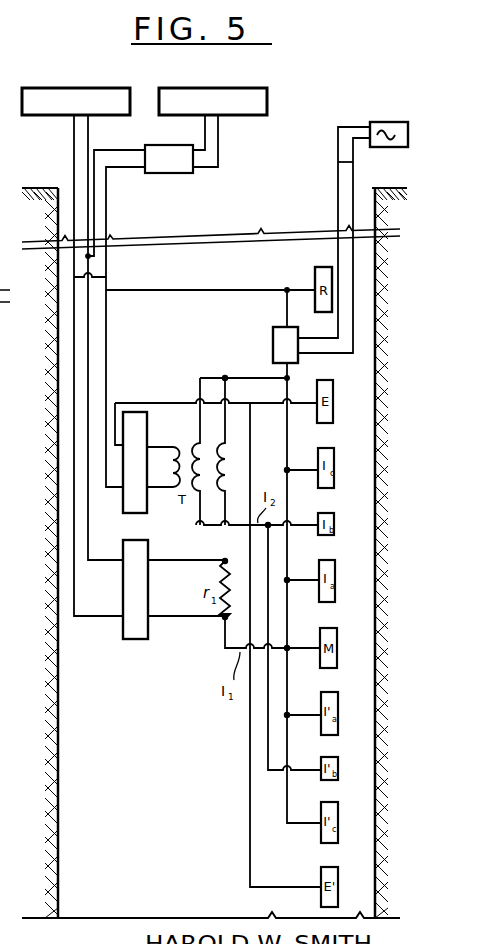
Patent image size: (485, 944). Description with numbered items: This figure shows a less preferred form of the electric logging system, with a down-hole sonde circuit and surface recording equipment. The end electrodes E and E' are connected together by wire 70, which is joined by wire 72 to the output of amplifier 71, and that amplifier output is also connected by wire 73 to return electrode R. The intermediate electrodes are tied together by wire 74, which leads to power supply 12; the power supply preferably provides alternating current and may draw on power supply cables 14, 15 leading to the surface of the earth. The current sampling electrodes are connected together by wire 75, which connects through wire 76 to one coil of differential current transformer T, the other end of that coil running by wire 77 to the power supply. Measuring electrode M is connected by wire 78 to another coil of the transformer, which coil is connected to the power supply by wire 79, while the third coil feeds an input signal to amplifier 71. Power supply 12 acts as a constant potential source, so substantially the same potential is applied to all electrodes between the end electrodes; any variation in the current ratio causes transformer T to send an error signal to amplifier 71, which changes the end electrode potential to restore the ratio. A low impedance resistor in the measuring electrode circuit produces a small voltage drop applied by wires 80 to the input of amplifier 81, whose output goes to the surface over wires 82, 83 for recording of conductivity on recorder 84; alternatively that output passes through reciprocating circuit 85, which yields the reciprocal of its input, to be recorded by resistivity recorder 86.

The power supply 12 is at (273, 340).
The power supply cable 14 is at (338, 190).
The power supply cable 15 is at (338, 160).
The wire 70 is at (276, 408).
The amplifier 71 is at (147, 430).
The wire 72 is at (160, 403).
The wire 73 is at (106, 357).
The wire 74 is at (288, 544).
The wire 75 is at (308, 523).
The wire 76 is at (200, 527).
The wire 77 is at (197, 393).
The wire 78 is at (225, 630).
The wire 79 is at (227, 387).
The wires 80 is at (168, 562).
The amplifier 81 is at (138, 639).
The wire 82 is at (88, 335).
The wire 83 is at (74, 311).
The recorder 84 is at (72, 88).
The reciprocating circuit 85 is at (163, 173).
The resistivity recorder 86 is at (218, 88).